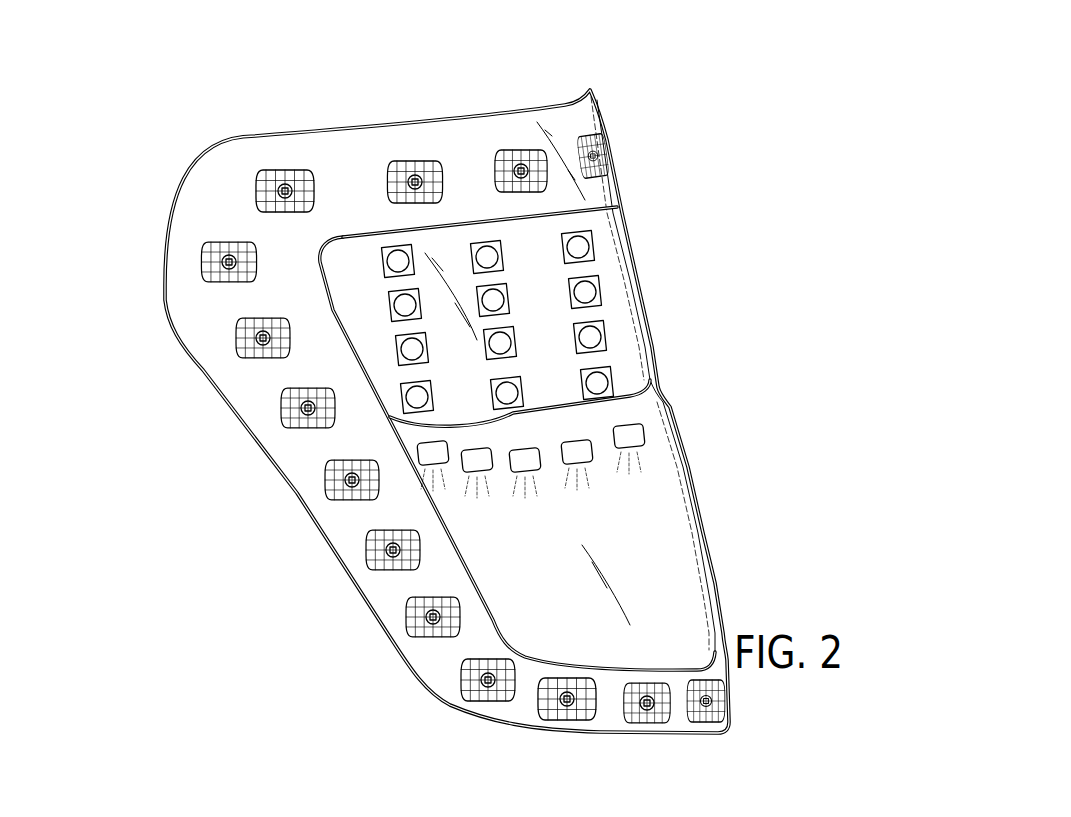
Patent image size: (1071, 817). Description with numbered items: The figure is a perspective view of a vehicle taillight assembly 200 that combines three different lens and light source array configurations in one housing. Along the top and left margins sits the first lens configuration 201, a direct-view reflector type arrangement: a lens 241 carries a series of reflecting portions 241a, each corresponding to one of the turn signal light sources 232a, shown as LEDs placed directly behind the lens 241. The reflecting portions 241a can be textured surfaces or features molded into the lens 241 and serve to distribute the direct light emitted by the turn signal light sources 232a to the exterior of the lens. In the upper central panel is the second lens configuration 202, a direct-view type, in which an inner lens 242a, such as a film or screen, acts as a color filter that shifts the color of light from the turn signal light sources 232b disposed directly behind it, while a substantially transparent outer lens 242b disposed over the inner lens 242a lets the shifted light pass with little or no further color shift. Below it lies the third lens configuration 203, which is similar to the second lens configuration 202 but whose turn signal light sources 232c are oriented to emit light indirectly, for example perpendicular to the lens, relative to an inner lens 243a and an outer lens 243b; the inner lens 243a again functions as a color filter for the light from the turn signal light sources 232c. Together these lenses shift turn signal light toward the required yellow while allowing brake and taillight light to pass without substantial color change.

The taillight assembly 200 is at (631, 51).
The first lens configuration 201 is at (584, 121).
The second lens configuration 202 is at (606, 259).
The third lens configuration 203 is at (660, 417).
The turn signal light sources 232a is at (285, 187).
The turn signal light sources 232b is at (592, 337).
The turn signal light sources 232c is at (477, 458).
The lens 241 is at (260, 182).
The reflecting portions 241a is at (392, 172).
The inner lens 242a is at (637, 322).
The outer lens 242b is at (655, 357).
The inner lens 243a is at (688, 498).
The outer lens 243b is at (710, 541).